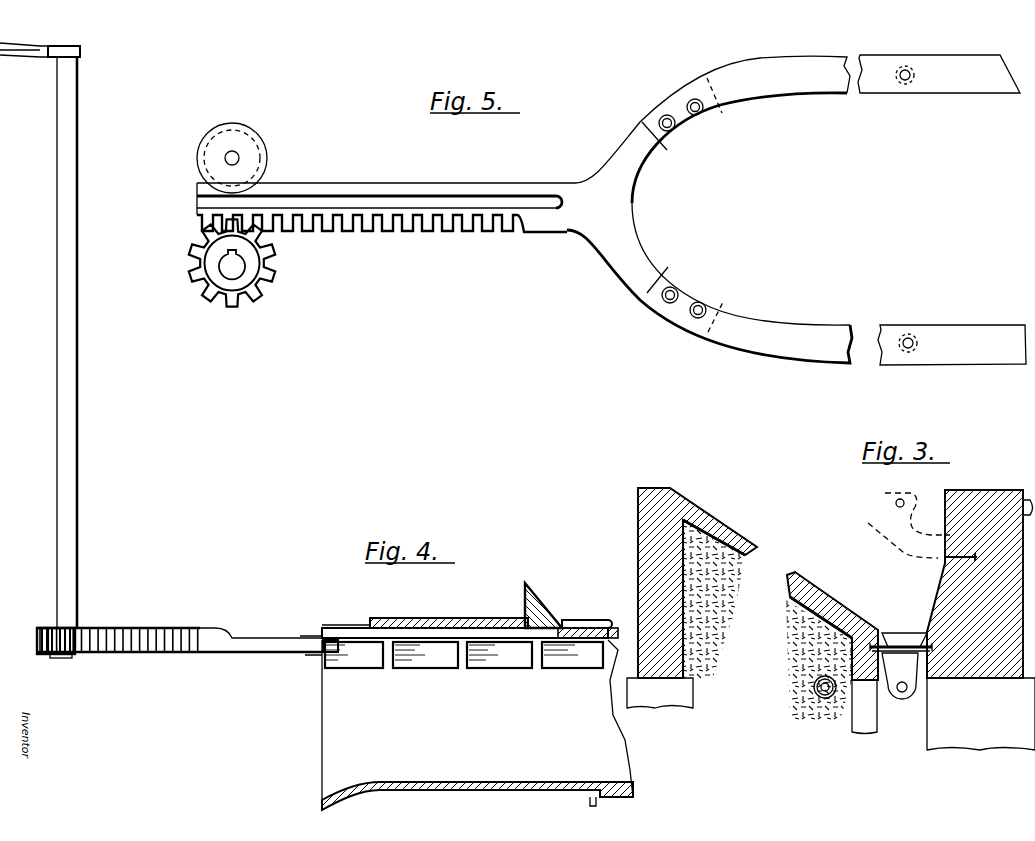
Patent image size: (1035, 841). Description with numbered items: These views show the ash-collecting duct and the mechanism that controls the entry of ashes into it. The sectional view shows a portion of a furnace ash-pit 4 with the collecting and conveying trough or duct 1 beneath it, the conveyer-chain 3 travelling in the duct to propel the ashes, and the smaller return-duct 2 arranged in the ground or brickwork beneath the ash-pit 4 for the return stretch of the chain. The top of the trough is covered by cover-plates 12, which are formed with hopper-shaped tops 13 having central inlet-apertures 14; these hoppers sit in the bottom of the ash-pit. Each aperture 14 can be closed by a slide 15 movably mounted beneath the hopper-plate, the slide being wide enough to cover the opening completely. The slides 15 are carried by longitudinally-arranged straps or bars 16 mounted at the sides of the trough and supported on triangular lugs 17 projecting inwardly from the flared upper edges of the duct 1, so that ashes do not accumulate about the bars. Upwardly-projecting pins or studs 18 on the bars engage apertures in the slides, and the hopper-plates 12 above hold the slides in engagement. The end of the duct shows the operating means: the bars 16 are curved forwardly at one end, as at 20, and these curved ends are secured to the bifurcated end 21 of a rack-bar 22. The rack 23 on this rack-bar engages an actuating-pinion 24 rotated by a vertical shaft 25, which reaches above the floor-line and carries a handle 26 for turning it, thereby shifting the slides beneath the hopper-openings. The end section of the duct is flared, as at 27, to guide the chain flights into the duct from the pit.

In FIG. 4, the collecting and conveying trough or duct 1 is at (477, 725).
In FIG. 3, the collecting and conveying trough or duct 1 is at (845, 661).
In FIG. 3, the return-duct 2 is at (812, 694).
In FIG. 3, the conveyer-chain 3 is at (825, 697).
In FIG. 3, the ash-pit 4 is at (832, 640).
In FIG. 4, the cover-plate 12 is at (497, 640).
In FIG. 4, the hopper-shaped top 13 is at (578, 583).
In FIG. 3, the hopper-shaped top 13 is at (904, 631).
In FIG. 4, the inlet-aperture 14 is at (582, 624).
In FIG. 3, the inlet-aperture 14 is at (906, 642).
In FIG. 4, the slide 15 is at (612, 641).
In FIG. 5, the strap or bar 16 is at (948, 83).
In FIG. 4, the strap or bar 16 is at (437, 637).
In FIG. 4, the lug 17 is at (387, 668).
In FIG. 5, the pin or stud 18 is at (908, 69).
In FIG. 5, the curved end 20 is at (752, 100).
In FIG. 4, the curved end 20 is at (348, 640).
In FIG. 5, the bifurcated end 21 is at (673, 205).
In FIG. 4, the bifurcated end 21 is at (315, 647).
In FIG. 5, the rack-bar 22 is at (524, 209).
In FIG. 4, the rack-bar 22 is at (275, 628).
In FIG. 5, the rack 23 is at (408, 228).
In FIG. 4, the rack 23 is at (152, 630).
In FIG. 5, the actuating-pinion 24 is at (232, 279).
In FIG. 4, the actuating-pinion 24 is at (40, 653).
In FIG. 4, the vertical shaft 25 is at (55, 490).
In FIG. 4, the handle 26 is at (40, 36).
In FIG. 4, the flared end 27 is at (322, 796).